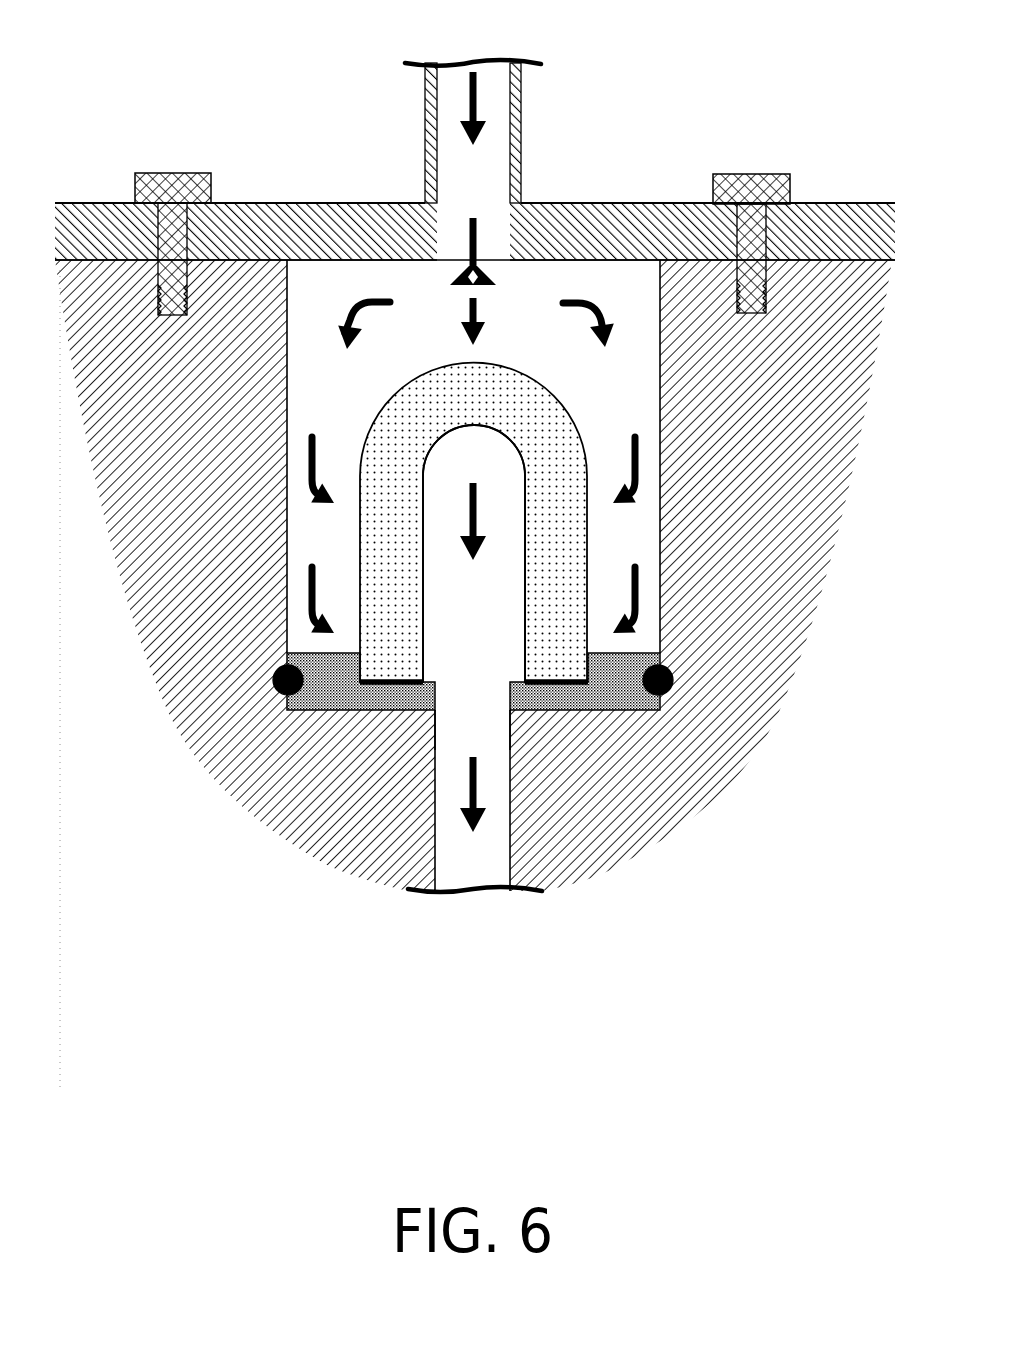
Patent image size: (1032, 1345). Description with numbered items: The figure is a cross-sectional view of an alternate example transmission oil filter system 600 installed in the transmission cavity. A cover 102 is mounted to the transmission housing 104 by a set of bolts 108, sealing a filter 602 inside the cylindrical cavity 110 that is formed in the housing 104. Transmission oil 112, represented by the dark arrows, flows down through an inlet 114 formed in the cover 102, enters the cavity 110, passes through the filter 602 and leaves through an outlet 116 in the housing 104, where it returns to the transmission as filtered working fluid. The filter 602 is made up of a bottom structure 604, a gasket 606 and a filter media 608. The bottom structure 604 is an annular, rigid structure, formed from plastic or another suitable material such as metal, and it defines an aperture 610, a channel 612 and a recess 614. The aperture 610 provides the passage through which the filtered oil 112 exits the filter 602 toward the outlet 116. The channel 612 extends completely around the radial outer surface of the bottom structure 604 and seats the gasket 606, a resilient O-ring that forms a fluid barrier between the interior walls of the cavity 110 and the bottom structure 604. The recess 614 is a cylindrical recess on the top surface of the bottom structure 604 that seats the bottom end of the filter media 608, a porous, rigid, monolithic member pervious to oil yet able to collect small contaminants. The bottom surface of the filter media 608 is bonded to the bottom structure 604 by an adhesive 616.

The system 600 is at (216, 78).
The cover 102 is at (300, 222).
The transmission housing 104 is at (197, 405).
The bolts 108 is at (172, 185).
The cavity 110 is at (634, 530).
The transmission oil 112 is at (470, 217).
The inlet 114 is at (487, 168).
The outlet 116 is at (490, 797).
The filter 602 is at (546, 376).
The bottom structure 604 is at (355, 704).
The gasket 606 is at (674, 674).
The filter media 608 is at (568, 440).
The aperture 610 is at (456, 693).
The channel 612 is at (630, 688).
The recess 614 is at (390, 674).
The adhesive 616 is at (530, 680).